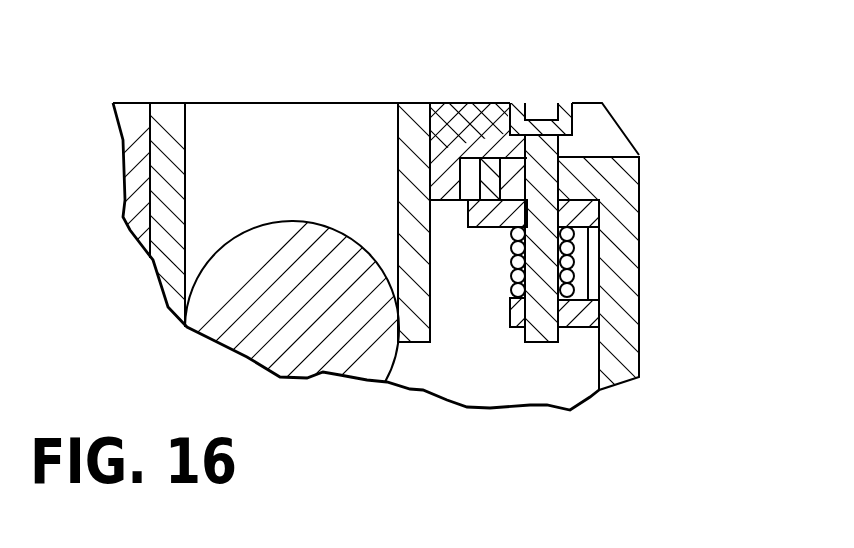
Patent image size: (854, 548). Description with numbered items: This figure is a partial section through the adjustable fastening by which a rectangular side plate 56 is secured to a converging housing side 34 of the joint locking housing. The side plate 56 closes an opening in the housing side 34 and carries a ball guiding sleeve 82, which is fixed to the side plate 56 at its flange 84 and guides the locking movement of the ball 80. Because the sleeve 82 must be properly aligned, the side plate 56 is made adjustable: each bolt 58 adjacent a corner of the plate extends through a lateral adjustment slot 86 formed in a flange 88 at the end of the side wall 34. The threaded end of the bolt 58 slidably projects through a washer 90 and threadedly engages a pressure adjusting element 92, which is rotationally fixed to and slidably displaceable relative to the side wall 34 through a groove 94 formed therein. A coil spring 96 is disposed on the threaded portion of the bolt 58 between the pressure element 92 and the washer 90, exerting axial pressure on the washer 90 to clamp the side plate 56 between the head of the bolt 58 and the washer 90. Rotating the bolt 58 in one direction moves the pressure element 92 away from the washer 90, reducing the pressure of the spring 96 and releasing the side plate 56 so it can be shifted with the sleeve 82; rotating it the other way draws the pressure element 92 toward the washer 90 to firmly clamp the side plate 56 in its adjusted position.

The housing side 34 is at (623, 352).
The side plate 56 is at (488, 130).
The bolt 58 is at (562, 108).
The ball 80 is at (332, 337).
The sleeve 82 is at (423, 333).
The flange 84 is at (456, 192).
The lateral adjustment slot 86 is at (520, 165).
The flange 88 is at (434, 103).
The washer 90 is at (578, 203).
The pressure adjusting element 92 is at (575, 325).
The groove 94 is at (592, 290).
The coil spring 96 is at (514, 272).